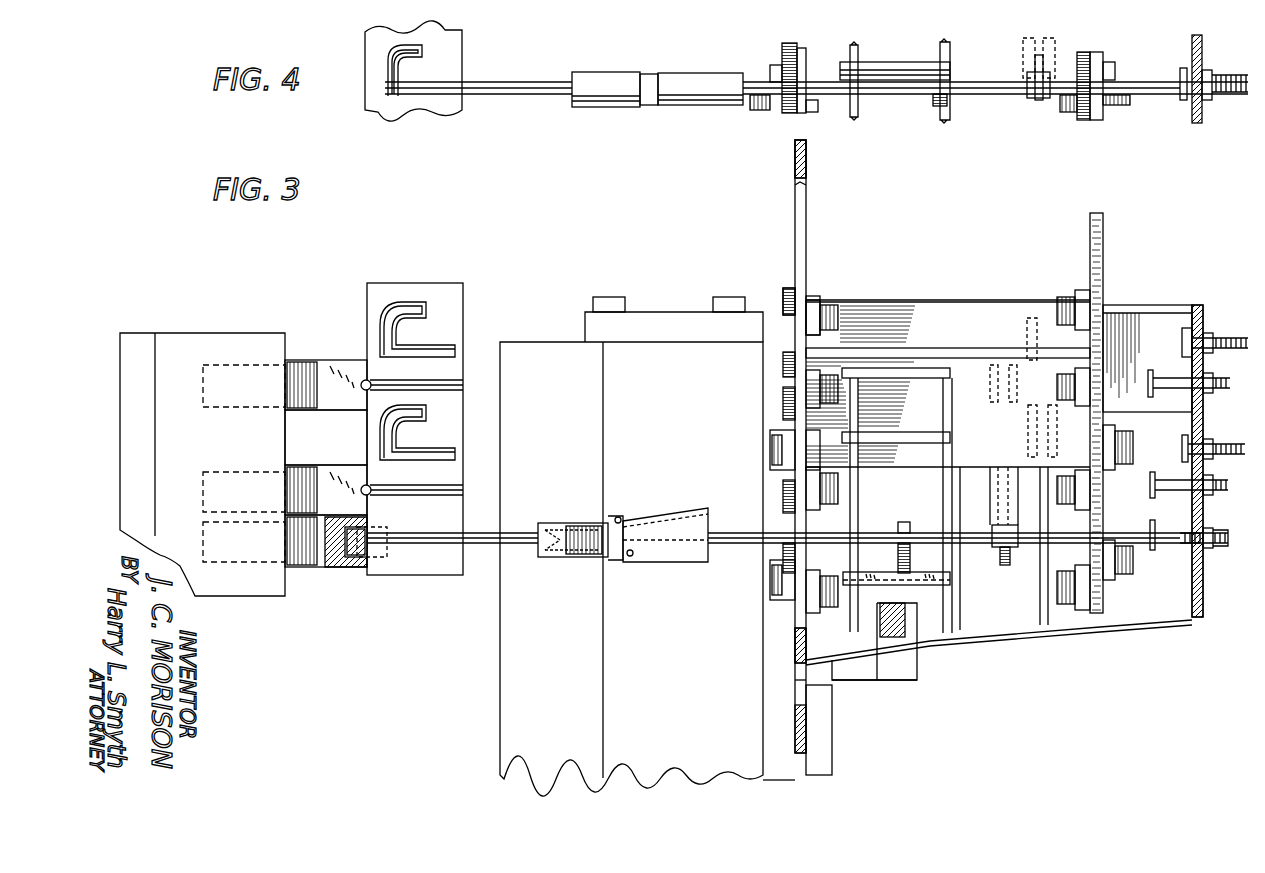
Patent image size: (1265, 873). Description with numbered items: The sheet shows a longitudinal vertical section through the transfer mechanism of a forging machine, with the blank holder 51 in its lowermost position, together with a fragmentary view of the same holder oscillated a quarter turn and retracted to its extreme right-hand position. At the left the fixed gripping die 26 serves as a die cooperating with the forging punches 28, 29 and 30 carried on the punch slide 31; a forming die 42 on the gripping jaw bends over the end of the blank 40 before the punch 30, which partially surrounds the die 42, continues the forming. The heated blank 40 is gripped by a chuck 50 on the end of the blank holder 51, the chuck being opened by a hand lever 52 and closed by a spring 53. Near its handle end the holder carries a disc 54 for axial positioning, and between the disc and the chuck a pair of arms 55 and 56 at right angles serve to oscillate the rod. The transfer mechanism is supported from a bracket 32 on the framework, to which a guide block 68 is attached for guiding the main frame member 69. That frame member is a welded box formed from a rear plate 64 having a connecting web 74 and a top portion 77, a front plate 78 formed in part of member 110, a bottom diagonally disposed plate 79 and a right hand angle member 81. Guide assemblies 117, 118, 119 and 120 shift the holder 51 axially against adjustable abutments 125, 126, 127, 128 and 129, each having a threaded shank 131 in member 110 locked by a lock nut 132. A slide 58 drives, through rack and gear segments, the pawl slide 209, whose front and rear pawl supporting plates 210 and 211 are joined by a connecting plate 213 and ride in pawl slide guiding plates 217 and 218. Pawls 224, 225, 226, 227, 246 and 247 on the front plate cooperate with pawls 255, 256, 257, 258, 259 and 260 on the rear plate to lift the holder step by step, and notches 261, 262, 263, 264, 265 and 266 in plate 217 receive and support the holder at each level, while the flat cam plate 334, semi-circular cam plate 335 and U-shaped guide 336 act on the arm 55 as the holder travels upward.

In FIG. 4, the fixed gripping die 26 is at (420, 113).
In FIG. 3, the fixed gripping die 26 is at (436, 283).
In FIG. 3, the forging punch 28 is at (320, 375).
In FIG. 3, the forging punch 29 is at (318, 480).
In FIG. 3, the forging punch 30 is at (305, 580).
In FIG. 3, the punch slide 31 is at (205, 318).
In FIG. 3, the bracket 32 is at (657, 312).
In FIG. 4, the blank 40 is at (502, 96).
In FIG. 3, the blank 40 is at (490, 545).
In FIG. 3, the forming die 42 is at (355, 580).
In FIG. 4, the chuck 50 is at (618, 108).
In FIG. 3, the chuck 50 is at (553, 523).
In FIG. 4, the blank holder 51 is at (975, 88).
In FIG. 3, the blank holder 51 is at (727, 533).
In FIG. 4, the hand lever 52 is at (708, 106).
In FIG. 3, the hand lever 52 is at (682, 520).
In FIG. 3, the spring 53 is at (582, 526).
In FIG. 4, the disc 54 is at (1030, 68).
In FIG. 3, the disc 54 is at (998, 556).
In FIG. 4, the arm 55 is at (930, 95).
In FIG. 3, the arm 55 is at (912, 553).
In FIG. 4, the arm 56 is at (940, 106).
In FIG. 3, the arm 56 is at (912, 508).
In FIG. 3, the slide 58 is at (908, 625).
In FIG. 3, the rear plate 64 is at (808, 212).
In FIG. 3, the guide block 68 is at (820, 746).
In FIG. 3, the main frame member 69 is at (1184, 628).
In FIG. 3, the connecting web 74 is at (795, 640).
In FIG. 3, the top portion 77 is at (808, 166).
In FIG. 3, the front plate 78 is at (1201, 303).
In FIG. 3, the bottom diagonally disposed plate 79 is at (1000, 648).
In FIG. 3, the right hand angle member 81 is at (1136, 311).
In FIG. 4, the front plate member 110 is at (1198, 116).
In FIG. 3, the front plate member 110 is at (1195, 615).
In FIG. 3, the guide assembly 117 is at (1025, 336).
In FIG. 3, the guide assembly 118 is at (988, 386).
In FIG. 4, the guide assembly 119 is at (1021, 50).
In FIG. 3, the guide assembly 119 is at (1027, 438).
In FIG. 3, the guide assembly 120 is at (985, 482).
In FIG. 3, the adjustable abutment 125 is at (1152, 548).
In FIG. 3, the adjustable abutment 126 is at (1152, 480).
In FIG. 4, the adjustable abutment 127 is at (1183, 101).
In FIG. 3, the adjustable abutment 127 is at (1182, 448).
In FIG. 3, the adjustable abutment 128 is at (1150, 375).
In FIG. 3, the adjustable abutment 129 is at (1182, 343).
In FIG. 3, the threaded shank 131 is at (1188, 533).
In FIG. 3, the lock nut 132 is at (1210, 549).
In FIG. 3, the pawl slide 209 is at (931, 298).
In FIG. 3, the front pawl supporting plate 210 is at (1082, 300).
In FIG. 3, the rear pawl supporting plate 211 is at (812, 300).
In FIG. 3, the connecting plate 213 is at (967, 314).
In FIG. 3, the pawl slide guiding plate 217 is at (1103, 240).
In FIG. 3, the pawl slide guiding plate 218 is at (788, 292).
In FIG. 3, the pawl 224 is at (1080, 584).
In FIG. 3, the pawl 225 is at (1080, 478).
In FIG. 3, the pawl 226 is at (1080, 378).
In FIG. 3, the pawl 227 is at (1066, 300).
In FIG. 3, the pawl 246 is at (1110, 528).
In FIG. 3, the pawl 247 is at (1108, 442).
In FIG. 3, the pawl 255 is at (826, 305).
In FIG. 3, the pawl 256 is at (808, 388).
In FIG. 3, the pawl 257 is at (790, 440).
In FIG. 3, the pawl 258 is at (840, 492).
In FIG. 3, the pawl 259 is at (783, 580).
In FIG. 3, the pawl 260 is at (815, 586).
In FIG. 3, the notch 261 is at (785, 548).
In FIG. 3, the notch 262 is at (790, 486).
In FIG. 3, the notch 263 is at (782, 462).
In FIG. 3, the notch 264 is at (790, 400).
In FIG. 3, the notch 265 is at (790, 356).
In FIG. 3, the notch 266 is at (790, 288).
In FIG. 3, the flat top cam plate 334 is at (913, 368).
In FIG. 4, the semi-circular cam plate 335 is at (897, 65).
In FIG. 3, the semi-circular cam plate 335 is at (890, 440).
In FIG. 3, the U-shaped guide 336 is at (932, 586).